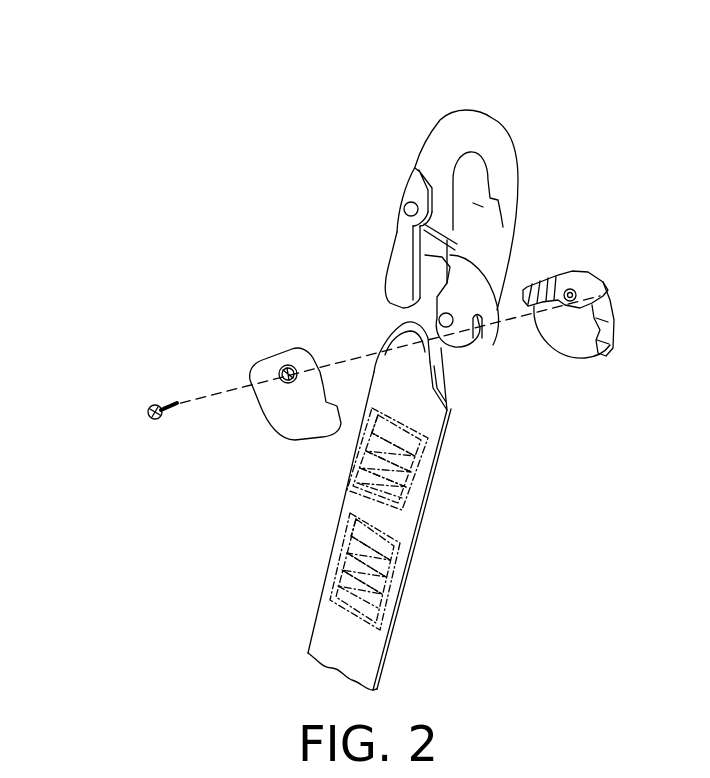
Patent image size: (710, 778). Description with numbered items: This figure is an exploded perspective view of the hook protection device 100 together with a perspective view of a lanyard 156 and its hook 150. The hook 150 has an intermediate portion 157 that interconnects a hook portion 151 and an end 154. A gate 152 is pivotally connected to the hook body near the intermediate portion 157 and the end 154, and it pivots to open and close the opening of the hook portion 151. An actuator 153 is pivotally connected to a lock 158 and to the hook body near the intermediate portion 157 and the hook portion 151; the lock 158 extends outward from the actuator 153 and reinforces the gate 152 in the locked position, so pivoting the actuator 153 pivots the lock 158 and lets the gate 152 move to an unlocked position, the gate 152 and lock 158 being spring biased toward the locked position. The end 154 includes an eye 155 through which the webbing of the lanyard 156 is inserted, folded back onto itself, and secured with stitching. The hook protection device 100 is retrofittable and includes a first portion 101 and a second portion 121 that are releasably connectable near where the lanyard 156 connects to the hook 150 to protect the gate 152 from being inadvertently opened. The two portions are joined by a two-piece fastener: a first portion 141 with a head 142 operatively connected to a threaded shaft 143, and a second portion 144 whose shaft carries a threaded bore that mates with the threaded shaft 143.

The hook protection device 100 is at (196, 246).
The first portion 101 is at (282, 361).
The second portion 121 is at (601, 346).
The first portion 141 is at (136, 404).
The head 142 is at (155, 419).
The threaded shaft 143 is at (178, 409).
The second portion 144 is at (578, 284).
The hook 150 is at (430, 86).
The hook portion 151 is at (503, 172).
The gate 152 is at (507, 237).
The actuator 153 is at (387, 270).
The end 154 is at (448, 363).
The eye 155 is at (392, 332).
The lanyard 156 is at (370, 650).
The intermediate portion 157 is at (443, 203).
The lock 158 is at (490, 316).